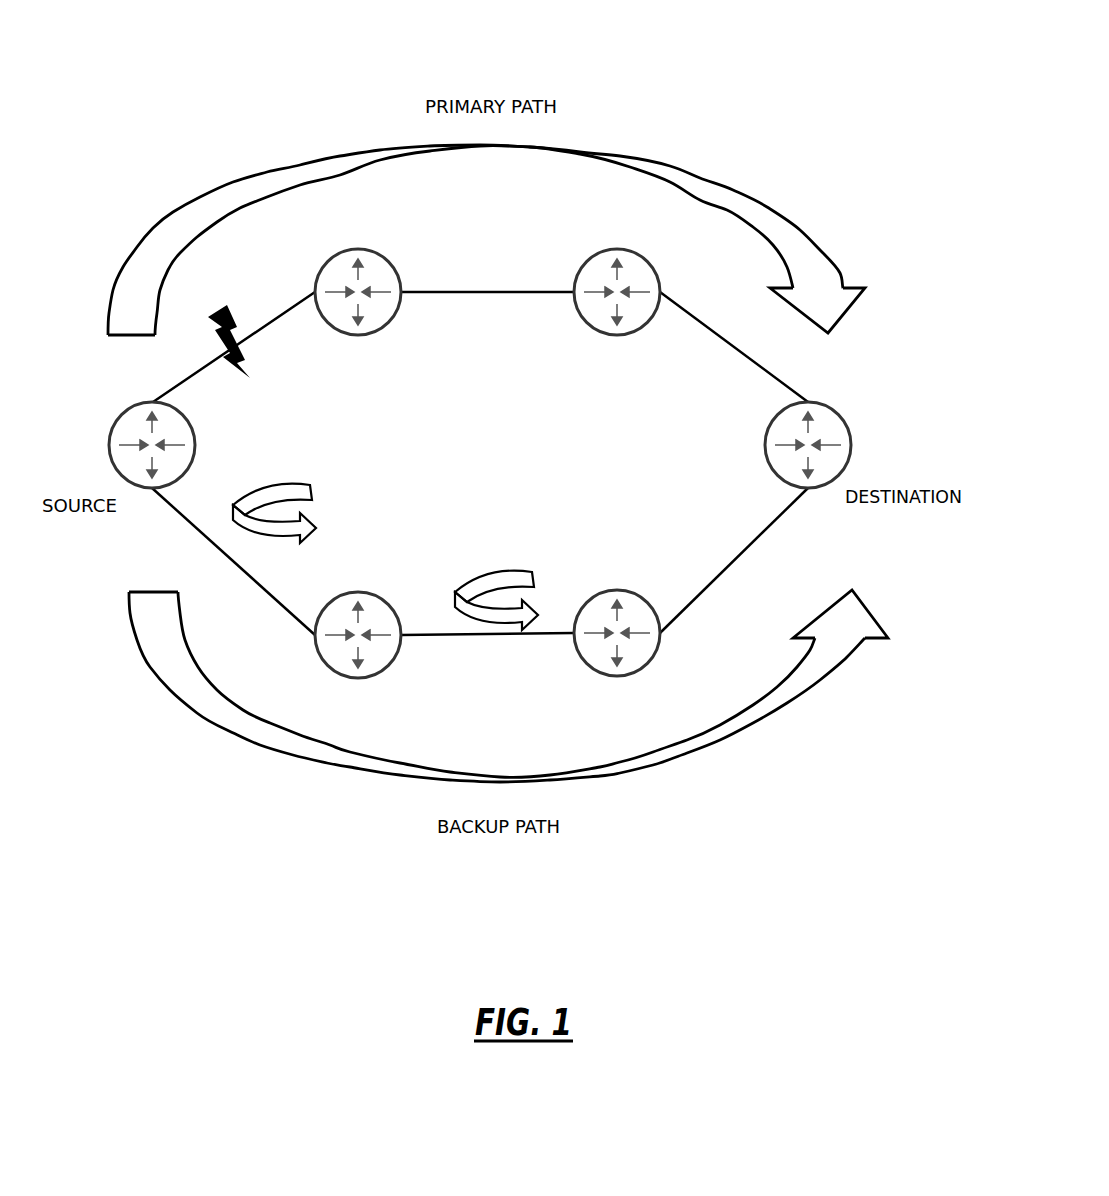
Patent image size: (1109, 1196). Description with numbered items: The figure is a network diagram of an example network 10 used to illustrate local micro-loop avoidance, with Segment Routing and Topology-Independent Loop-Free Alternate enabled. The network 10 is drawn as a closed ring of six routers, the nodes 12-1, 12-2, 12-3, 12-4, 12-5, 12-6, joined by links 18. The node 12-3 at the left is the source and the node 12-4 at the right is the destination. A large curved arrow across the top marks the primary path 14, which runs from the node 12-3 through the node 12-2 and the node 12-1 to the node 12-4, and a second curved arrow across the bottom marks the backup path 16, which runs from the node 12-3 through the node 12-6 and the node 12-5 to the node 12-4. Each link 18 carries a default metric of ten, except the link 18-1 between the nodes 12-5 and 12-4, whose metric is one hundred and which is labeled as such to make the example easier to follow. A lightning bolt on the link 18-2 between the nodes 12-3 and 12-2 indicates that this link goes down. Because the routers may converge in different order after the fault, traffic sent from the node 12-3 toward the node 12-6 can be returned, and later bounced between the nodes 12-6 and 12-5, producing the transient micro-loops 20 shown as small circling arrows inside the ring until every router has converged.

The network 10 is at (767, 62).
The node 12-1 is at (595, 327).
The node 12-2 is at (395, 272).
The node 12-3 is at (193, 438).
The node 12-4 is at (842, 418).
The node 12-5 is at (580, 658).
The node 12-6 is at (388, 605).
The primary path 14 is at (537, 83).
The backup path 16 is at (417, 837).
The link 18 is at (487, 283).
The link 18-1 is at (692, 530).
The link 18-2 is at (235, 290).
The micro-loops 20 is at (303, 463).